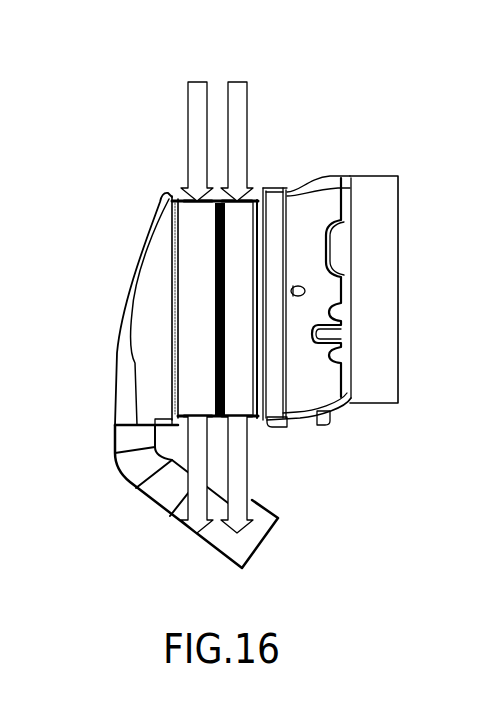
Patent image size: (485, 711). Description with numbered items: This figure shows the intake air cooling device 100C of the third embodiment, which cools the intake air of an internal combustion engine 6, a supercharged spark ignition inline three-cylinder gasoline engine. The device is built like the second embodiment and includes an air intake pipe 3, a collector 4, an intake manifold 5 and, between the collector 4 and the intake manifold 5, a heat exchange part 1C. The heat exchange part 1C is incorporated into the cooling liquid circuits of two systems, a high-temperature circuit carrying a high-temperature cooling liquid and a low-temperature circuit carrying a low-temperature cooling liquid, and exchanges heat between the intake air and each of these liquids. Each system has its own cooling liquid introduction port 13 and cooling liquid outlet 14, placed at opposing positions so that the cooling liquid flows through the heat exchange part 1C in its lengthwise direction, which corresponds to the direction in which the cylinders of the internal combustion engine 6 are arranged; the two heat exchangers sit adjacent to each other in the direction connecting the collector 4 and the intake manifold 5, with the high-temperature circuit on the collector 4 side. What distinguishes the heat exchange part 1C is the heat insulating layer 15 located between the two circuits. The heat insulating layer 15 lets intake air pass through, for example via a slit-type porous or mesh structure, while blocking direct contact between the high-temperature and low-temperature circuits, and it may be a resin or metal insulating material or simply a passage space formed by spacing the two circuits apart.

The intake air cooling device 100C is at (87, 161).
The heat exchange part 1C is at (197, 238).
The air intake pipe 3 is at (221, 528).
The collector 4 is at (155, 362).
The intake manifold 5 is at (316, 210).
The internal combustion engine 6 is at (377, 190).
The cooling liquid introduction port 13 is at (196, 196).
The cooling liquid outlet 14 is at (197, 422).
The heat insulating layer 15 is at (215, 297).